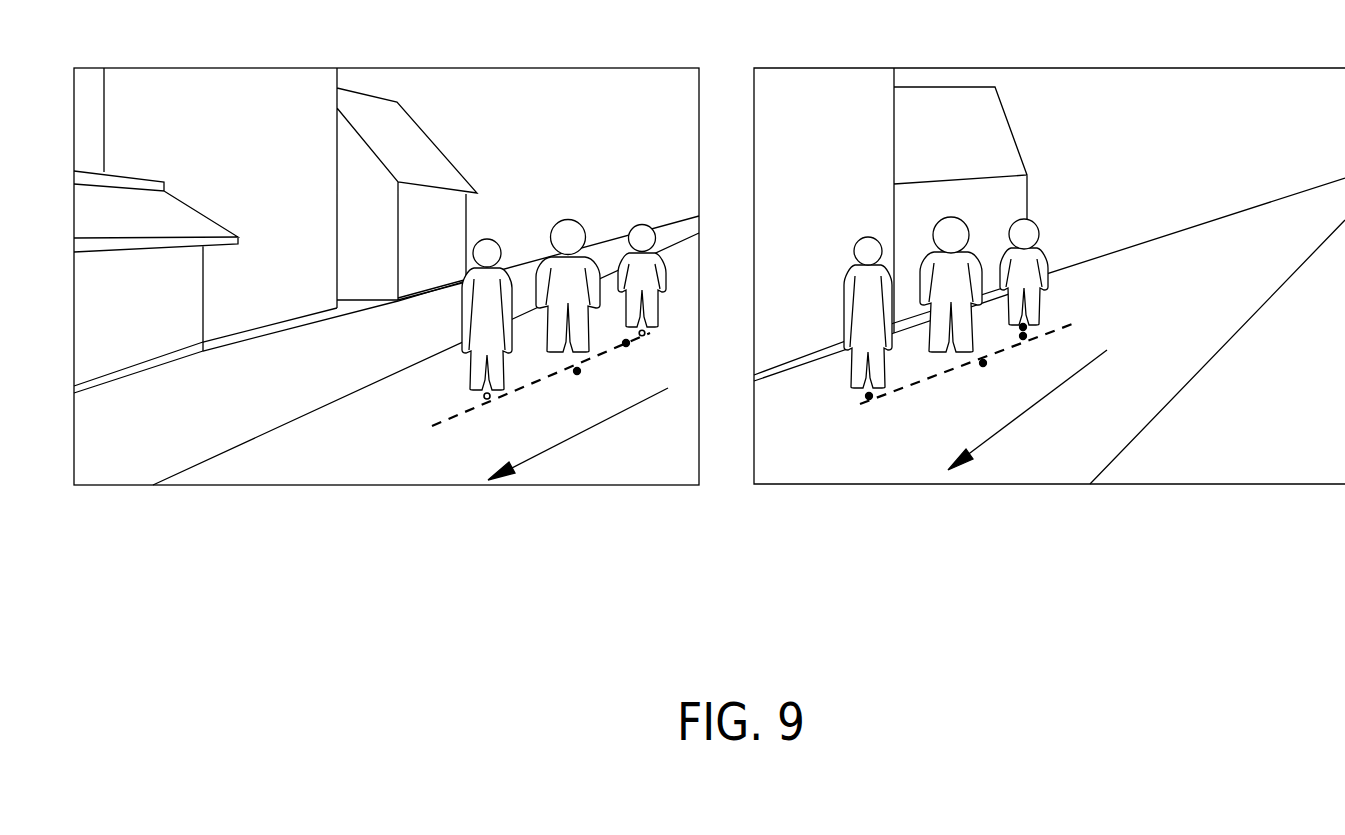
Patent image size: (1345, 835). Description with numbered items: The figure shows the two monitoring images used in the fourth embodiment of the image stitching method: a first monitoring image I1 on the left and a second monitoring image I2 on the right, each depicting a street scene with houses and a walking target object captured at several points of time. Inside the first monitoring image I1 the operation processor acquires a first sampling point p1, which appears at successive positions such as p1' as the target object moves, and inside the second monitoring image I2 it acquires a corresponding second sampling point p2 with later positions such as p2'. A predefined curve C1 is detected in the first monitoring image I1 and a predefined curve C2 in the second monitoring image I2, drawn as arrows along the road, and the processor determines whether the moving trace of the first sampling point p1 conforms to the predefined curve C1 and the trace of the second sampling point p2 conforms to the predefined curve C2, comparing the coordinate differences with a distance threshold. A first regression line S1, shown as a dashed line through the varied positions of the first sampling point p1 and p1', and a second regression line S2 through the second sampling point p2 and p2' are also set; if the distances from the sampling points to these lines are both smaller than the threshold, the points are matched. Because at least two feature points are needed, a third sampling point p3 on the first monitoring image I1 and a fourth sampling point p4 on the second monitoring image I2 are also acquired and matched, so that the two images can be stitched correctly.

The first monitoring image I1 is at (386, 318).
The second monitoring image I2 is at (1049, 318).
The first regression line S1 is at (435, 423).
The second regression line S2 is at (1073, 322).
The predefined curve C1 is at (578, 434).
The predefined curve C2 is at (1027, 410).
The first sampling point p1 is at (494, 415).
The first sampling point p1' is at (588, 388).
The third sampling point p3 is at (645, 333).
The second sampling point p2 is at (850, 406).
The second sampling point p2' is at (983, 381).
The fourth sampling point p4 is at (1001, 329).